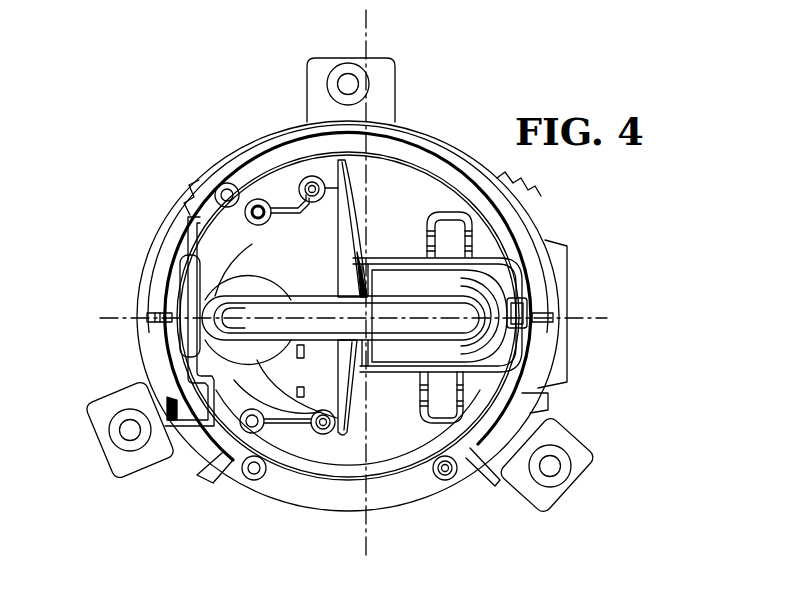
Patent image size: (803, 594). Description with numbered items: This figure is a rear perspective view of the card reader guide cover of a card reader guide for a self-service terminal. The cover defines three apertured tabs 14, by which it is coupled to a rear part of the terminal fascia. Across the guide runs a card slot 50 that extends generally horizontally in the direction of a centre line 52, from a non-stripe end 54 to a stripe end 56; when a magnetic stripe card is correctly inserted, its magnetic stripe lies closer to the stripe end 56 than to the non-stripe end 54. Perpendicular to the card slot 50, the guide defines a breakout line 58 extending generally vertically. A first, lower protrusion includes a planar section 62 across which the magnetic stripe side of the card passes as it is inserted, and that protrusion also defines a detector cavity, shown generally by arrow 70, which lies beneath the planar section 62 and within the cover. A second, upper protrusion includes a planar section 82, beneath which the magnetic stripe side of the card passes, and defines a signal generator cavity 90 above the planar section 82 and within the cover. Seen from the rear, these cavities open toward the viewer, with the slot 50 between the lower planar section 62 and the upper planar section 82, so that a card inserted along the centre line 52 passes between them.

The apertured tabs 14 is at (387, 58).
The card slot 50 is at (430, 301).
The centre line 52 is at (593, 322).
The non-stripe end 54 is at (487, 300).
The stripe end 56 is at (206, 300).
The breakout line 58 is at (368, 537).
The planar section 62 is at (253, 330).
The detector cavity 70 is at (283, 380).
The planar section 82 is at (230, 283).
The signal generator cavity 90 is at (243, 232).